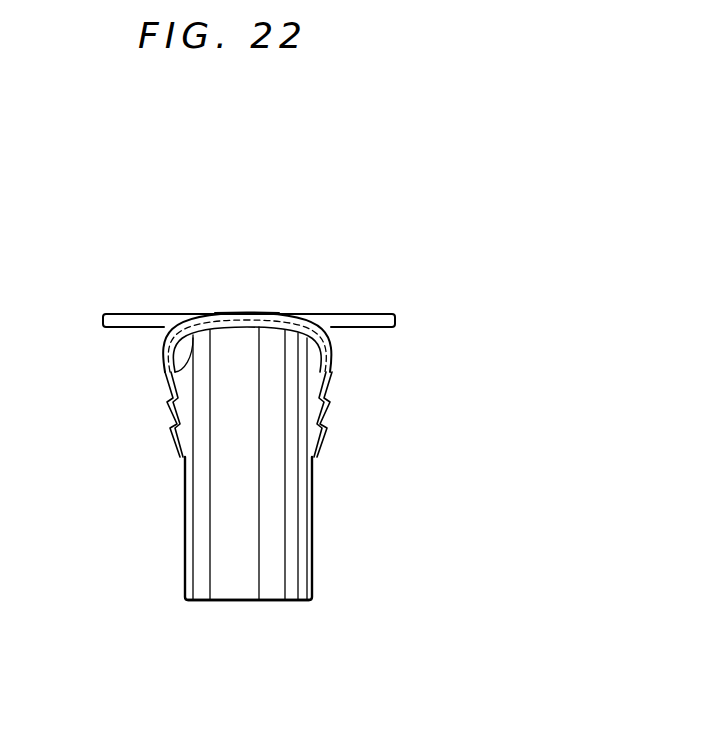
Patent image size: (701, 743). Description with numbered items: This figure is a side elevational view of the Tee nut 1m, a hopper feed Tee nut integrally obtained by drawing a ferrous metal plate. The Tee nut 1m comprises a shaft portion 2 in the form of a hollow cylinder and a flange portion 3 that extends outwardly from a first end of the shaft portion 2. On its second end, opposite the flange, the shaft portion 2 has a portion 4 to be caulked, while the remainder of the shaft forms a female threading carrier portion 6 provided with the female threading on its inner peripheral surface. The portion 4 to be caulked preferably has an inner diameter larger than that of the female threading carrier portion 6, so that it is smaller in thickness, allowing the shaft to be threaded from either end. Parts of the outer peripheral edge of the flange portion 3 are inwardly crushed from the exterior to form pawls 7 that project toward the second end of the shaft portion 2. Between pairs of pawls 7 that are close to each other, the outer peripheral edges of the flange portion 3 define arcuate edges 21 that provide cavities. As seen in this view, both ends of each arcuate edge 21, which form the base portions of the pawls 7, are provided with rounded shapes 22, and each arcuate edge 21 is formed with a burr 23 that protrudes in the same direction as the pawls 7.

The Tee nut 1m is at (422, 197).
The shaft portion 2 is at (327, 526).
The flange portion 3 is at (387, 327).
The portion to be caulked 4 is at (208, 602).
The female threading carrier portion 6 is at (237, 413).
The pawls 7 is at (177, 443).
The arcuate edges 21 is at (248, 314).
The rounded shapes 22 is at (172, 315).
The burr 23 is at (166, 370).